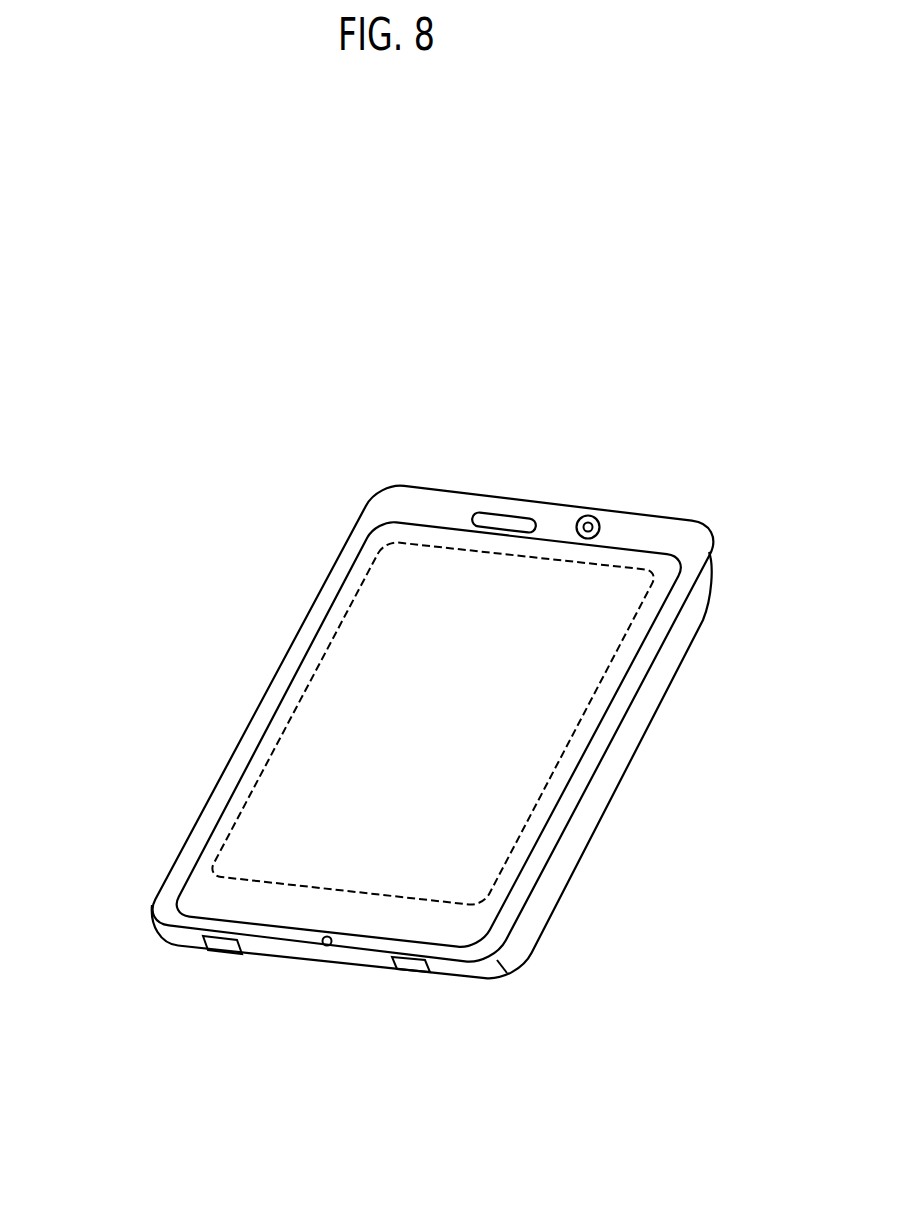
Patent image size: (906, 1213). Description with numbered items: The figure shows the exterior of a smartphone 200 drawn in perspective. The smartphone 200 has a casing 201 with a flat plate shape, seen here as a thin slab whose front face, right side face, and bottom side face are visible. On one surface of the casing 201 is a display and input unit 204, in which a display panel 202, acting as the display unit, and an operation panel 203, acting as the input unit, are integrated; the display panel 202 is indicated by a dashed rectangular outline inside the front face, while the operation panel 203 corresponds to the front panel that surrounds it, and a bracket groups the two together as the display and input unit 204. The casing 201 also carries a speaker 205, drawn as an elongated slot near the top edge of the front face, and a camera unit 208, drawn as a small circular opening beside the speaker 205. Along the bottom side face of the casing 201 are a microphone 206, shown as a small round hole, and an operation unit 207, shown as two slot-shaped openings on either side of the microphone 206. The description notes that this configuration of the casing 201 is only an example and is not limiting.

The smartphone 200 is at (166, 384).
The casing 201 is at (380, 498).
The display panel 202 is at (621, 562).
The operation panel 203 is at (683, 519).
The display and input unit 204 is at (757, 434).
The speaker 205 is at (503, 513).
The microphone 206 is at (327, 946).
The operation unit 207 is at (232, 945).
The camera unit 208 is at (583, 516).